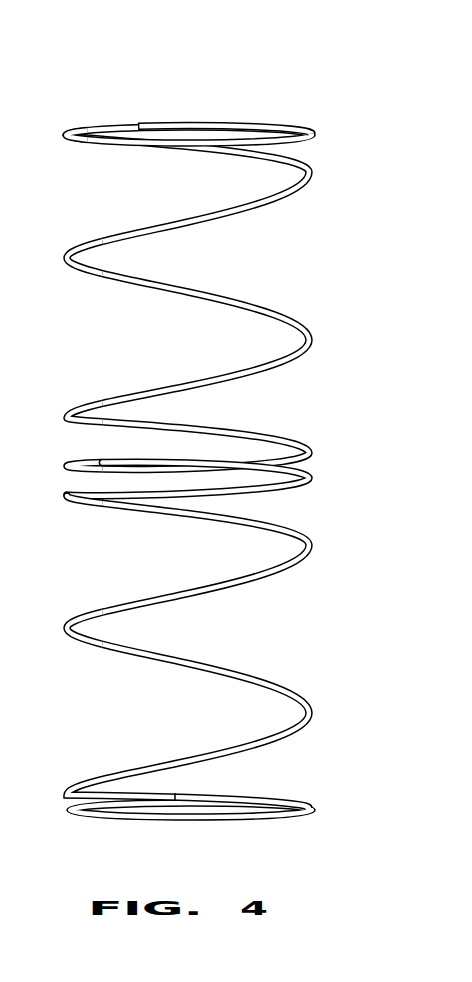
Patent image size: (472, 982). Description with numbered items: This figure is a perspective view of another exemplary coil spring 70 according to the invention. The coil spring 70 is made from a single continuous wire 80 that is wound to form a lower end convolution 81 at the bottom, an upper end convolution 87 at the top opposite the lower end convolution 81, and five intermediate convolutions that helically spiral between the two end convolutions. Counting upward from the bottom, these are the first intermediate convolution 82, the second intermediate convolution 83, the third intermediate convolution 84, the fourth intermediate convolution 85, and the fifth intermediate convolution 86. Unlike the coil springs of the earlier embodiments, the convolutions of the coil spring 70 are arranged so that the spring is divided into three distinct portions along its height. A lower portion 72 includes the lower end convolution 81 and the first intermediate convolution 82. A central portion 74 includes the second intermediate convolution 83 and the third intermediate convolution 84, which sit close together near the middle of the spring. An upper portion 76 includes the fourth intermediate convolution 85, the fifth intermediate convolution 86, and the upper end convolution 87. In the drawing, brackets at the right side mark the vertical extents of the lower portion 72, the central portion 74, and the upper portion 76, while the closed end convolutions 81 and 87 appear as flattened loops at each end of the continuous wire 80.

The coil spring 70 is at (98, 72).
The lower portion 72 is at (194, 646).
The central portion 74 is at (196, 465).
The upper portion 76 is at (197, 290).
The continuous wire 80 is at (168, 134).
The lower end convolution 81 is at (70, 803).
The first intermediate convolution 82 is at (64, 631).
The second intermediate convolution 83 is at (62, 495).
The third intermediate convolution 84 is at (63, 466).
The fourth intermediate convolution 85 is at (64, 418).
The fifth intermediate convolution 86 is at (64, 258).
The upper end convolution 87 is at (63, 137).